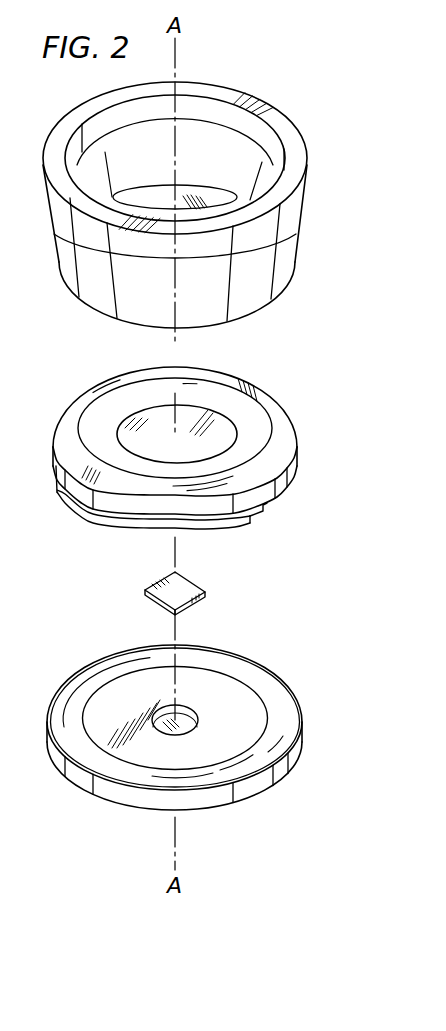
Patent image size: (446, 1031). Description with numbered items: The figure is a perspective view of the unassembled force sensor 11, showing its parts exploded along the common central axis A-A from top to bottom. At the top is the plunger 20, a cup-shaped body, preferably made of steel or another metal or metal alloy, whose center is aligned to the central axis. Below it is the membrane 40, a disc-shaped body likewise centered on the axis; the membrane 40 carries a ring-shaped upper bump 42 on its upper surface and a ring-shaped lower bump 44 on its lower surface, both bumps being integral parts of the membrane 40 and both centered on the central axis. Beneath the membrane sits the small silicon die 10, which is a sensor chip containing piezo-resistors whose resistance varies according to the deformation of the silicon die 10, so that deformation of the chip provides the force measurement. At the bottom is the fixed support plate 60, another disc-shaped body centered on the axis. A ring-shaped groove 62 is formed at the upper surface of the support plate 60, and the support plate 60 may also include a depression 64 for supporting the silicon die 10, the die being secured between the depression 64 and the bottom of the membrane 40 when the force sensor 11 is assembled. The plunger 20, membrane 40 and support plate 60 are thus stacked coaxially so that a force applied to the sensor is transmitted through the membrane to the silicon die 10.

The force sensor 11 is at (247, 61).
The plunger 20 is at (55, 238).
The membrane 40 is at (151, 459).
The upper bump 42 is at (113, 397).
The lower bump 44 is at (113, 525).
The silicon die 10 is at (160, 602).
The support plate 60 is at (167, 718).
The ring-shaped groove 62 is at (93, 675).
The depression 64 is at (183, 721).